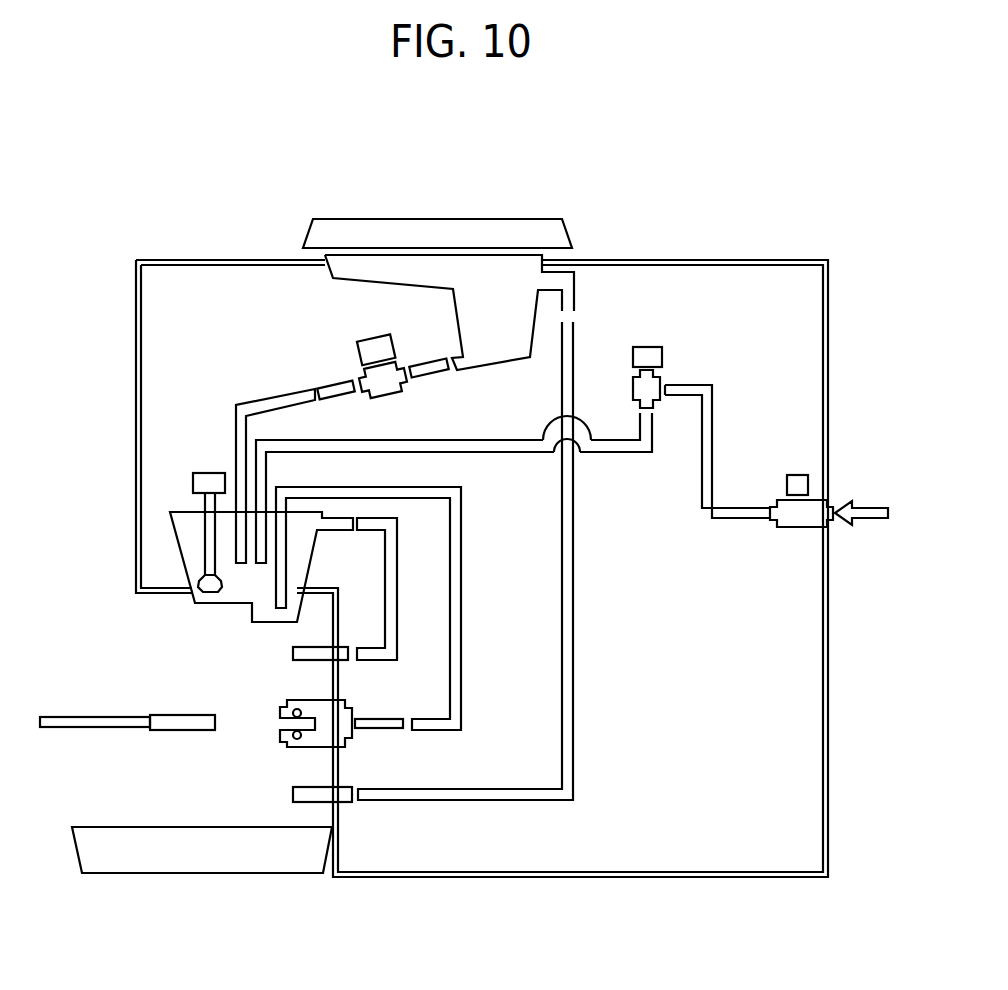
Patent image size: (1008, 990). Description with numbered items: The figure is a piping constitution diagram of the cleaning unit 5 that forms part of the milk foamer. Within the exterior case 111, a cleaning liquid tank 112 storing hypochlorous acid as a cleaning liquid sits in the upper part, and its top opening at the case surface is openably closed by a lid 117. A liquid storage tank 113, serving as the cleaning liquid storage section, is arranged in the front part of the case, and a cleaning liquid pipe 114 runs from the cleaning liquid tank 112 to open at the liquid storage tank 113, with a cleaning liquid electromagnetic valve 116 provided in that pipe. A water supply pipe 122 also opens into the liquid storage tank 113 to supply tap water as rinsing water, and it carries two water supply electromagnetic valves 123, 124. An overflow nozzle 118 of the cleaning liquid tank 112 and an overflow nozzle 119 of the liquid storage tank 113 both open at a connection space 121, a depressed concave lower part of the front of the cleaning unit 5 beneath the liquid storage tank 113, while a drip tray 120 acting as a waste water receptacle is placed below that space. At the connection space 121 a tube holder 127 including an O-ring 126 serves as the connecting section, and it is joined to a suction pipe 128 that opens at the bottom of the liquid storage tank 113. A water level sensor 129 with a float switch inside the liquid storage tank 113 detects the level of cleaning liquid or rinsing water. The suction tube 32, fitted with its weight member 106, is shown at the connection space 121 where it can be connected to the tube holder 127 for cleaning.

The cleaning unit 5 is at (769, 238).
The suction tube 32 is at (86, 716).
The weight member 106 is at (182, 715).
The exterior case 111 is at (831, 286).
The cleaning liquid tank 112 is at (360, 282).
The liquid storage tank 113 is at (173, 532).
The cleaning liquid pipe 114 is at (297, 392).
The cleaning liquid electromagnetic valve 116 is at (366, 338).
The lid 117 is at (527, 218).
The overflow nozzle 118 is at (575, 660).
The overflow nozzle 119 is at (417, 585).
The drip tray 120 is at (110, 825).
The connection space 121 is at (145, 650).
The water supply pipe 122 is at (625, 454).
The water supply electromagnetic valve 123 is at (798, 475).
The water supply electromagnetic valve 124 is at (645, 346).
The O-ring 126 is at (297, 746).
The tube holder 127 is at (307, 698).
The suction pipe 128 is at (462, 623).
The water level sensor 129 is at (210, 472).